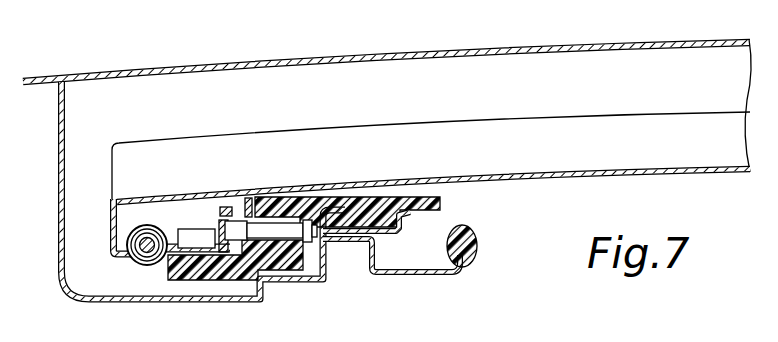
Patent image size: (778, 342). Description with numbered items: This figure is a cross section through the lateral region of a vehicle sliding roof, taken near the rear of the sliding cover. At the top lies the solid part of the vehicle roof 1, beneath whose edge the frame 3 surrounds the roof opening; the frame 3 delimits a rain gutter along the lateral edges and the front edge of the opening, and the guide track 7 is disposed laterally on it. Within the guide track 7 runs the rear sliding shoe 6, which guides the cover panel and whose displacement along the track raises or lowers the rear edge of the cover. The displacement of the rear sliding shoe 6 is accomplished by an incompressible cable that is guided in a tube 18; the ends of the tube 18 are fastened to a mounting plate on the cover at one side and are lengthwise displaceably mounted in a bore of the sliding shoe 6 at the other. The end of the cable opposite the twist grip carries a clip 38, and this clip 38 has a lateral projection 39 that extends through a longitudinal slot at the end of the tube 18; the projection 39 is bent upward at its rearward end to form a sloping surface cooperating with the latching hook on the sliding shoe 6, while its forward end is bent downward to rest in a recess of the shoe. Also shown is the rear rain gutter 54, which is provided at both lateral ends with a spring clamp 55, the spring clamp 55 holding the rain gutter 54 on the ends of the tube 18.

The solid part of the vehicle roof 1 is at (510, 46).
The frame 3 is at (59, 195).
The rear sliding shoe 6 is at (360, 228).
The guide track 7 is at (393, 241).
The tube 18 is at (137, 266).
The clip 38 is at (153, 268).
The lateral projection 39 is at (190, 281).
The rear rain gutter 54 is at (583, 157).
The spring clamp 55 is at (120, 256).